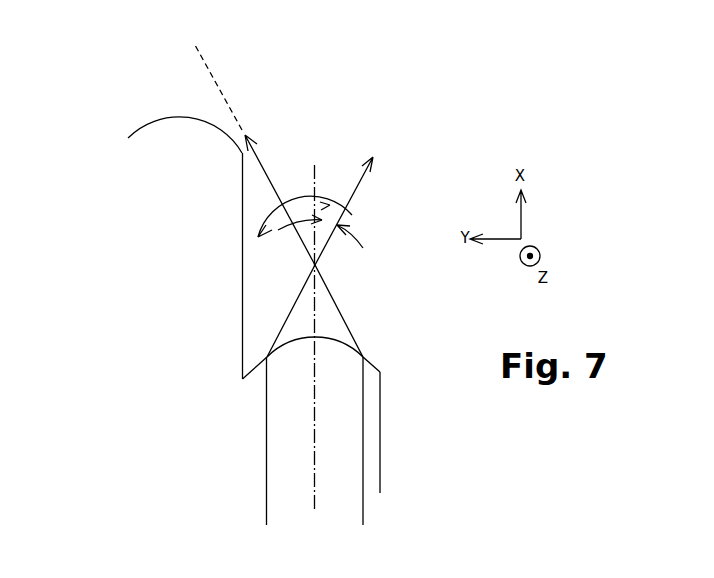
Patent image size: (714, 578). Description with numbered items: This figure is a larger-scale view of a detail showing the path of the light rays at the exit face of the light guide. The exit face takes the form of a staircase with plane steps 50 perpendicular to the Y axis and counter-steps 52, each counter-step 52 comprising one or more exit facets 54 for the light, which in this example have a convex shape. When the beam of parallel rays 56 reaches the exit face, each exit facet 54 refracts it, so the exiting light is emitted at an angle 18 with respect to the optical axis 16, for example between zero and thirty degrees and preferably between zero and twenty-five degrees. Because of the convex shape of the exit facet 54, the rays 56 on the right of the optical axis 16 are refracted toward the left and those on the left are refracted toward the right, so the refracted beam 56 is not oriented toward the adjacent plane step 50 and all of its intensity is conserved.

The optical axis 16 is at (315, 454).
The angle 18 is at (292, 205).
The plane step 50 is at (242, 288).
The counter-step 52 is at (213, 267).
The exit facet 54 is at (172, 118).
The beam of parallel rays 56 is at (266, 440).